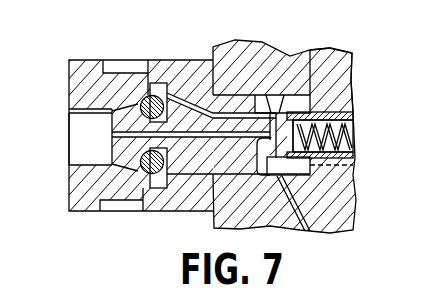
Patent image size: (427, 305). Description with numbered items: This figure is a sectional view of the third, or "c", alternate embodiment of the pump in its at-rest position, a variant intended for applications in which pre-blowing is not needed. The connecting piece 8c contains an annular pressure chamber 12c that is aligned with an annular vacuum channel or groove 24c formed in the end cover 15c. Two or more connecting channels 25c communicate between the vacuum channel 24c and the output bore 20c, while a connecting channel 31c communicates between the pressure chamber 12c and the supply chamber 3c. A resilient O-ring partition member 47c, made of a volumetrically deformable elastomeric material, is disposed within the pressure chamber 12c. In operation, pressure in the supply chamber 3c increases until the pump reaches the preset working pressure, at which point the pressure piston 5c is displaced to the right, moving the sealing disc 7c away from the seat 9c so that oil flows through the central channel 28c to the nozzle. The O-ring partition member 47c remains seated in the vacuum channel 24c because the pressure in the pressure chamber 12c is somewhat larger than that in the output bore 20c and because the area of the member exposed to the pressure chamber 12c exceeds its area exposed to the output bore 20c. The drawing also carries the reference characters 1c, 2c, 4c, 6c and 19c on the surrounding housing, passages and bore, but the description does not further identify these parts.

The housing body 1c is at (337, 198).
The passage 2c is at (303, 230).
The supply chamber 3c is at (272, 103).
The cap 4c is at (354, 164).
The pressure piston 5c is at (355, 156).
The spring 6c is at (350, 131).
The sealing disc 7c is at (300, 95).
The connecting piece 8c is at (167, 212).
The seat 9c is at (256, 178).
The pressure chamber 12c is at (179, 131).
The end cover 15c is at (90, 212).
The bore 19c is at (103, 134).
The output bore 20c is at (82, 156).
The vacuum channel 24c is at (143, 97).
The connecting channels 25c is at (125, 103).
The central channel 28c is at (190, 138).
The connecting channel 31c is at (185, 100).
The O-ring partition member 47c is at (148, 212).